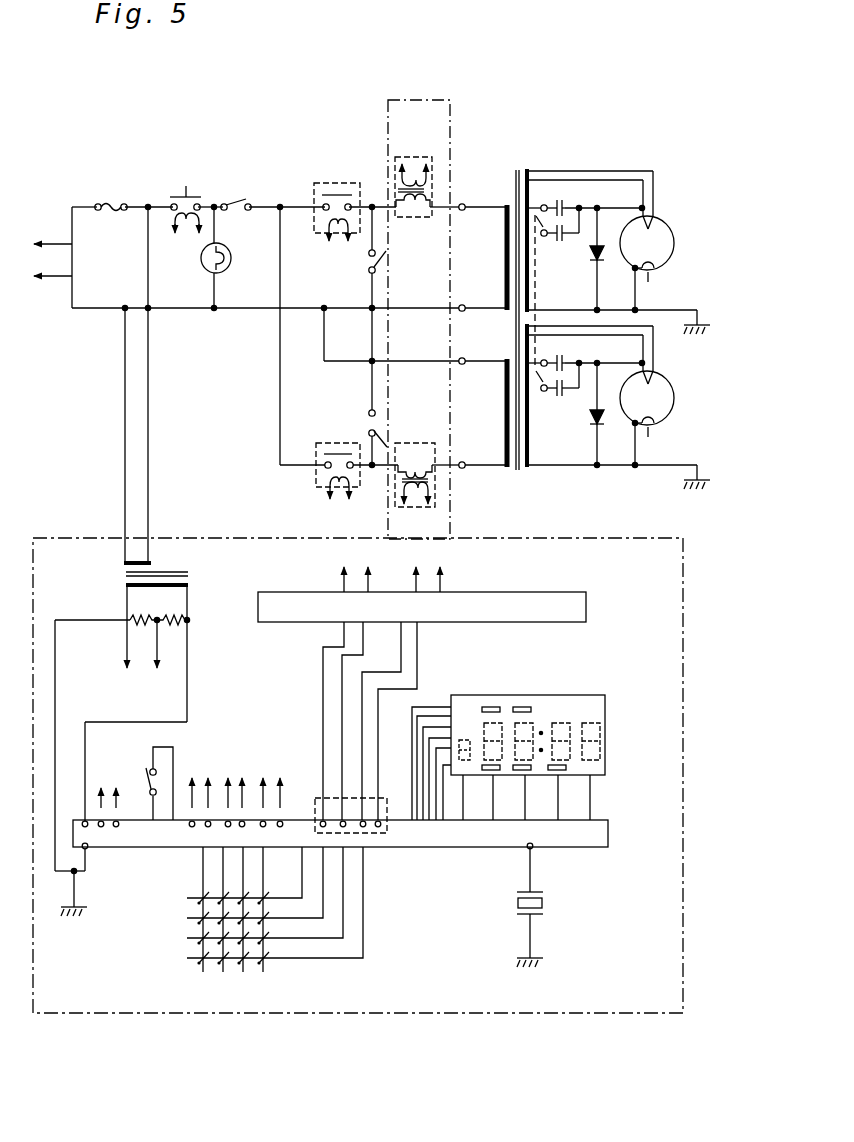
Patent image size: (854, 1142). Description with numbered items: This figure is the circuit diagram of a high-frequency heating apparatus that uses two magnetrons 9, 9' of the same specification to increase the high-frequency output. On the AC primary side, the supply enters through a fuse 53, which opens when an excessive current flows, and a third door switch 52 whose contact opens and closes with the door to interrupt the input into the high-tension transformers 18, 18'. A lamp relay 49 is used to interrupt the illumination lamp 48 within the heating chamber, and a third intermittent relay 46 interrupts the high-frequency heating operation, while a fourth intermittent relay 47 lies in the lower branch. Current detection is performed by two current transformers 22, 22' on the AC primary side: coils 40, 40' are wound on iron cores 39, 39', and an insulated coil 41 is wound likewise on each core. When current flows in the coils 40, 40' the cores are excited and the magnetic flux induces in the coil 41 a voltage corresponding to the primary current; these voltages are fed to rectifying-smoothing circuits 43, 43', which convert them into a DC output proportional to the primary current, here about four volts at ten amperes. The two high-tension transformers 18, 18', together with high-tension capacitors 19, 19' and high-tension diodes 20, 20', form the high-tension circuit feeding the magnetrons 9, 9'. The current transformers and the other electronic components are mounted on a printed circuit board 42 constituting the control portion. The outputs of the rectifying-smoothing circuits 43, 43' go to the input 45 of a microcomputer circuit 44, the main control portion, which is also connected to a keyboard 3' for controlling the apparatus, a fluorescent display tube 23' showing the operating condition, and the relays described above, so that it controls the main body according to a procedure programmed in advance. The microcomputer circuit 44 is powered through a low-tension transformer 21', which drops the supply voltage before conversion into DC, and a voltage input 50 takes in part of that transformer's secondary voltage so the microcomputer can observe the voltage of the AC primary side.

The fuse 53 is at (115, 205).
The lamp relay 49 is at (186, 186).
The third door switch 52 is at (235, 205).
The illumination lamp 48 is at (231, 258).
The third intermittent relay 46 is at (316, 183).
The current transformer 22 is at (400, 246).
The coil 41 is at (414, 173).
The iron core 39 is at (379, 167).
The coil 40 is at (443, 184).
The fourth intermittent relay 47 is at (318, 443).
The current transformer 22' is at (401, 420).
The coil 40' is at (445, 447).
The iron core 39' is at (449, 493).
The high-tension transformer 18 is at (532, 281).
The high-tension transformer 18' is at (552, 501).
The high-tension capacitor 19 is at (574, 188).
The high-tension diode 20 is at (573, 259).
The magnetron 9 is at (662, 242).
The high-tension capacitor 19' is at (586, 366).
The high-tension diode 20' is at (569, 414).
The magnetron 9' is at (669, 405).
The printed circuit board 42 is at (685, 549).
The low-tension transformer 21' is at (155, 637).
The rectifying-smoothing circuit 43 is at (403, 683).
The rectifying-smoothing circuit 43' is at (612, 632).
The fluorescent display tube 23' is at (508, 734).
The microcomputer circuit 44 is at (591, 848).
The voltage input 50 is at (116, 812).
The input 45 is at (318, 808).
The keyboard 3' is at (275, 927).